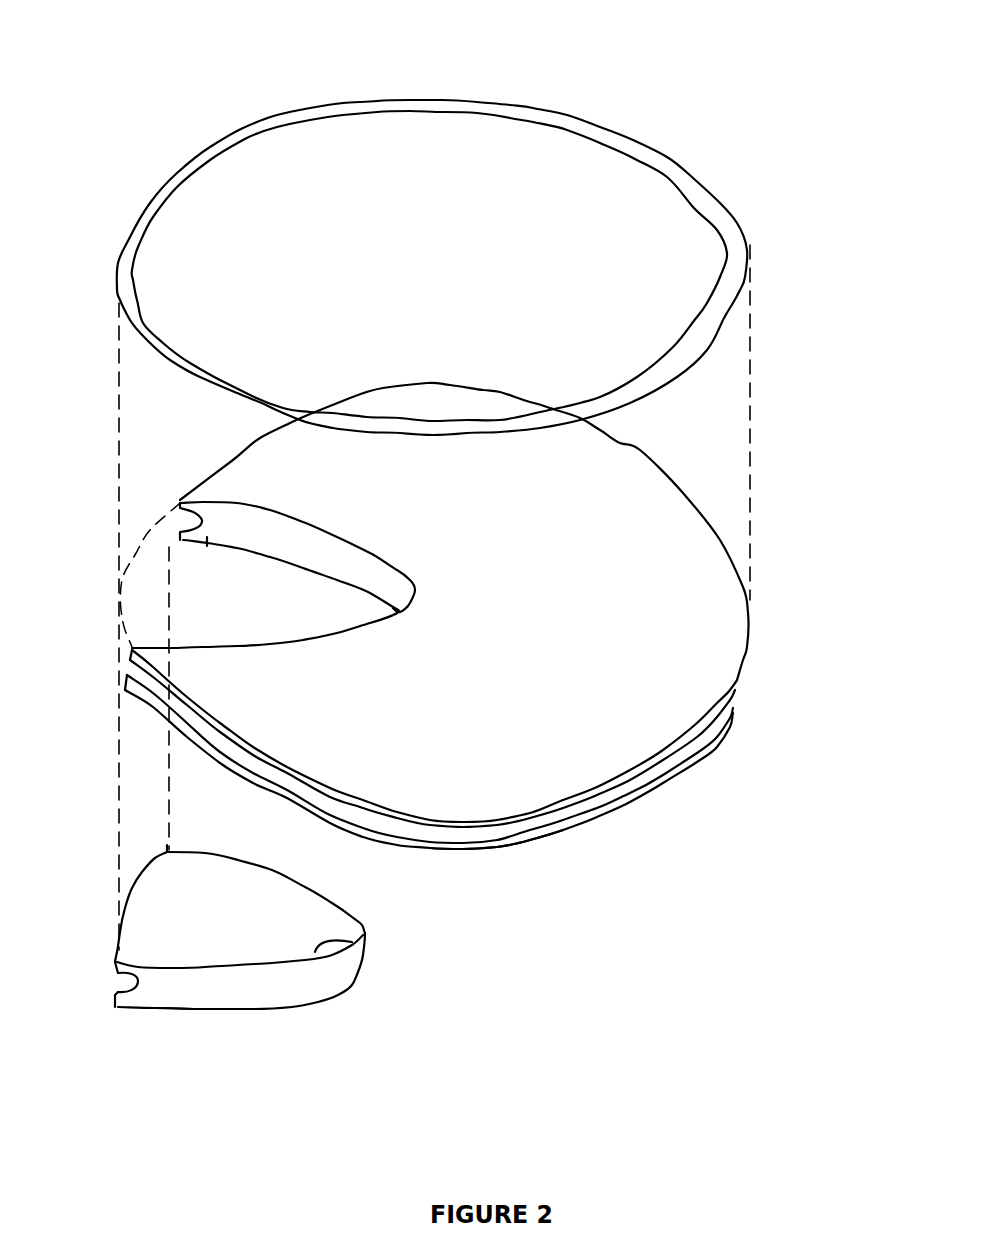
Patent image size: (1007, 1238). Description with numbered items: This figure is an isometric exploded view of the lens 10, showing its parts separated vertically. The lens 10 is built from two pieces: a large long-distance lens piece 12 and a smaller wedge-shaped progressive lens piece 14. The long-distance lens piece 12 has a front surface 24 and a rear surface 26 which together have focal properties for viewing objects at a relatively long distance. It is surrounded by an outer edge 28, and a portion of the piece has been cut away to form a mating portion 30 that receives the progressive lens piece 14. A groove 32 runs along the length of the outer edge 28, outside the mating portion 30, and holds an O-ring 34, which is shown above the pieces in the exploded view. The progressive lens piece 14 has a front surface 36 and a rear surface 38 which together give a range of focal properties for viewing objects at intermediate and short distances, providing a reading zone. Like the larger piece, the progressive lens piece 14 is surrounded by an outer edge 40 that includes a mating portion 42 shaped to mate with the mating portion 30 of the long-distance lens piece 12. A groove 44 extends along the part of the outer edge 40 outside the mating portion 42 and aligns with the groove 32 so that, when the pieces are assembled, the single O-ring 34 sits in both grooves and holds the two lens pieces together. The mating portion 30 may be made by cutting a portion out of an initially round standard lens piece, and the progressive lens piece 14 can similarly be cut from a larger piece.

The lens 10 is at (806, 98).
The long-distance lens piece 12 is at (417, 602).
The progressive lens piece 14 is at (246, 955).
The front surface 24 is at (664, 738).
The rear surface 26 is at (540, 843).
The outer edge 28 is at (742, 682).
The mating portion 30 is at (207, 540).
The groove 32 is at (650, 783).
The O-ring 34 is at (730, 218).
The front surface 36 is at (364, 940).
The rear surface 38 is at (293, 1003).
The outer edge 40 is at (158, 997).
The mating portion 42 is at (213, 995).
The groove 44 is at (118, 975).